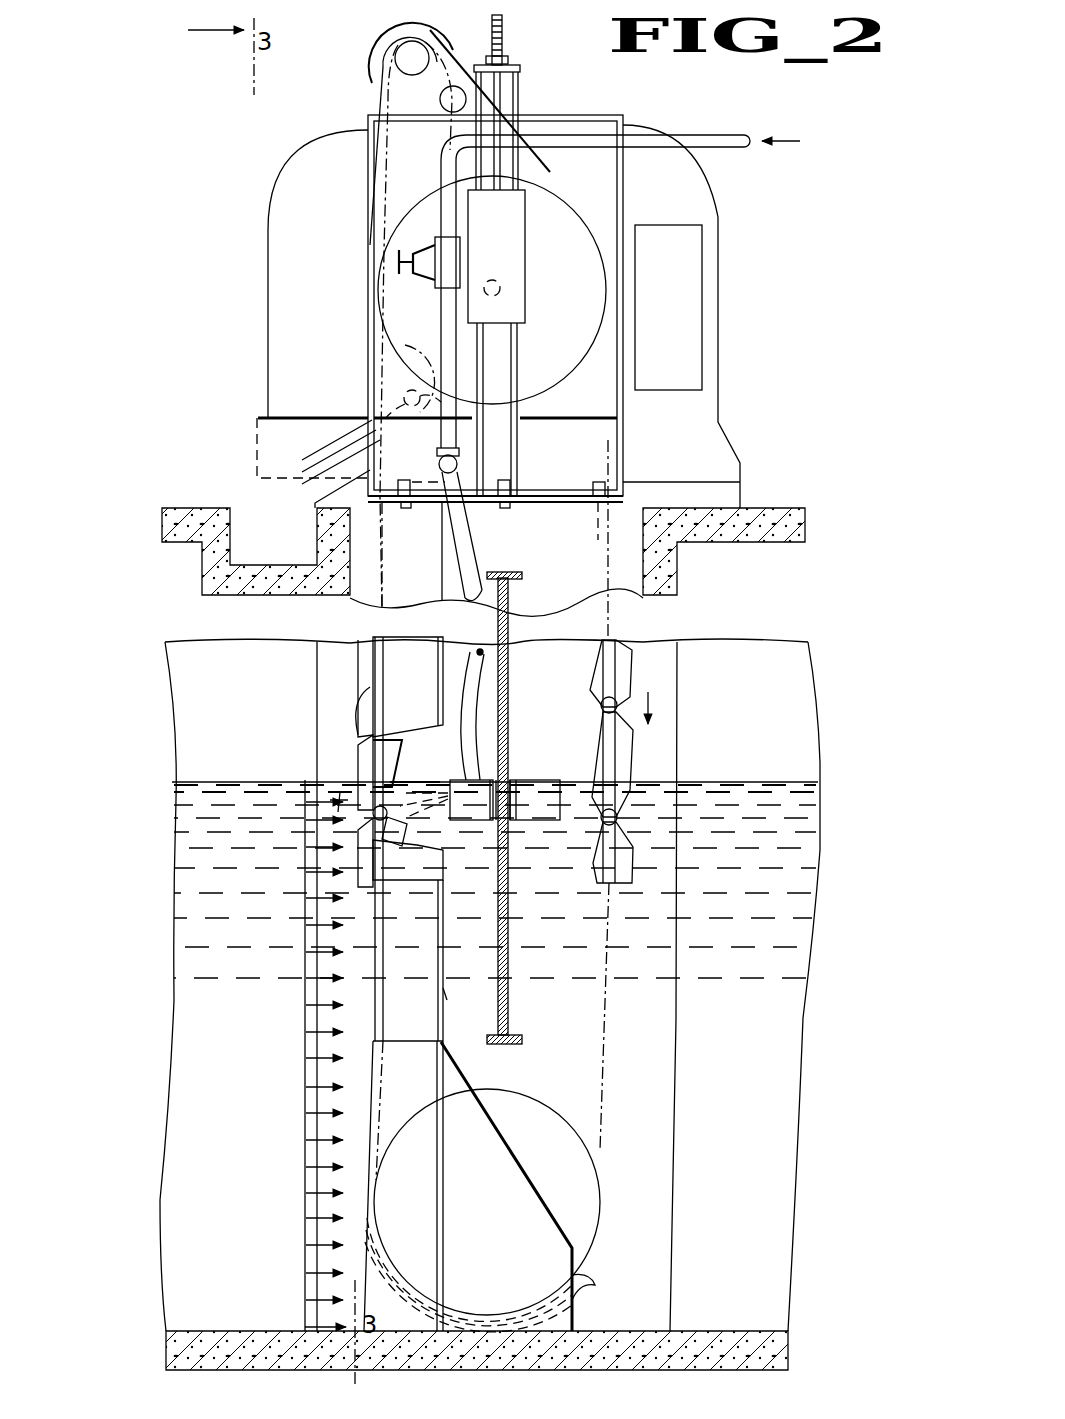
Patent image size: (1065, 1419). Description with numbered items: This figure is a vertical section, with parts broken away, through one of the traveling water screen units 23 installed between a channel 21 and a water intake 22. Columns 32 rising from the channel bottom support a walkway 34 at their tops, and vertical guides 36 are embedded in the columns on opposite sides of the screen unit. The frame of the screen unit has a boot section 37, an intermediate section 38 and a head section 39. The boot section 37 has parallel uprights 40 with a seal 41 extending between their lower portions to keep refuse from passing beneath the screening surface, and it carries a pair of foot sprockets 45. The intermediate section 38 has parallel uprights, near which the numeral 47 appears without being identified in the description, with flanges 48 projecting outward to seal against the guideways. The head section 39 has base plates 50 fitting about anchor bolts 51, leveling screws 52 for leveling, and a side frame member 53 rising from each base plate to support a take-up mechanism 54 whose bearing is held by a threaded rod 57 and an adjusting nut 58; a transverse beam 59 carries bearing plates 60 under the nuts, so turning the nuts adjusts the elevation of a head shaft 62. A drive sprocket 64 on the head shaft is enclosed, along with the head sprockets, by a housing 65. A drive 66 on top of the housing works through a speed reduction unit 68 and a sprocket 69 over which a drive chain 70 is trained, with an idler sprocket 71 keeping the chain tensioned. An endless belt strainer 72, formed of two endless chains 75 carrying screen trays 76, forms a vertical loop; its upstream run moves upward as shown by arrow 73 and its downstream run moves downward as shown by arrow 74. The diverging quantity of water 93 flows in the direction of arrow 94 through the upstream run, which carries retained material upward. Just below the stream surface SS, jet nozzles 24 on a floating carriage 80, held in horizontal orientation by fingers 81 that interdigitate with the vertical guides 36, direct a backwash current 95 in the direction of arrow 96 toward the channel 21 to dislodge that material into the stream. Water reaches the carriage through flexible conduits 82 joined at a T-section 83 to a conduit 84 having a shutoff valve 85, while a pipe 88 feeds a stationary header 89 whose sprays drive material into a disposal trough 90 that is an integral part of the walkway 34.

The channel 21 is at (165, 1078).
The water intake 22 is at (800, 1068).
The traveling water screen unit 23 is at (262, 243).
The jet nozzles 24 is at (446, 797).
The columns 32 is at (668, 572).
The walkway 34 is at (790, 512).
The vertical guides 36 is at (509, 660).
The boot section 37 is at (565, 1222).
The intermediate section 38 is at (450, 940).
The head section 39 is at (722, 397).
The uprights 40 is at (415, 1072).
The seal 41 is at (378, 1248).
The foot sprockets 45 is at (518, 1092).
The partition ledge 47 is at (428, 1015).
The flanges 48 is at (445, 996).
The base plates 50 is at (537, 503).
The anchor bolts 51 is at (397, 481).
The leveling screws 52 is at (481, 502).
The side frame member 53 is at (505, 362).
The take-up mechanism 54 is at (528, 258).
The threaded rod 57 is at (504, 35).
The adjusting nut 58 is at (509, 60).
The transverse beam 59 is at (520, 89).
The bearing plates 60 is at (521, 71).
The head shaft 62 is at (501, 290).
The drive sprocket 64 is at (412, 214).
The housing 65 is at (330, 275).
The drive 66 is at (382, 32).
The speed reduction unit 68 is at (378, 42).
The sprocket 69 is at (392, 84).
The drive chain 70 is at (395, 165).
The idler sprocket 71 is at (455, 85).
The endless belt strainer 72 is at (352, 744).
The arrow 73 is at (337, 690).
The arrow 74 is at (648, 692).
The endless chains 75 is at (378, 640).
The screen trays 76 is at (362, 690).
The floating carriage 80 is at (480, 808).
The fingers 81 is at (503, 795).
The flexible conduits 82 is at (476, 652).
The T-section 83 is at (458, 458).
The conduit 84 is at (442, 321).
The shutoff valve 85 is at (438, 286).
The pipe 88 is at (420, 376).
The stationary header 89 is at (390, 397).
The disposal trough 90 is at (272, 522).
The diverging quantity of water 93 is at (303, 1092).
The arrow 94 is at (286, 937).
The backwash current 95 is at (303, 822).
The arrow 96 is at (341, 792).
The stream surface SS is at (176, 782).